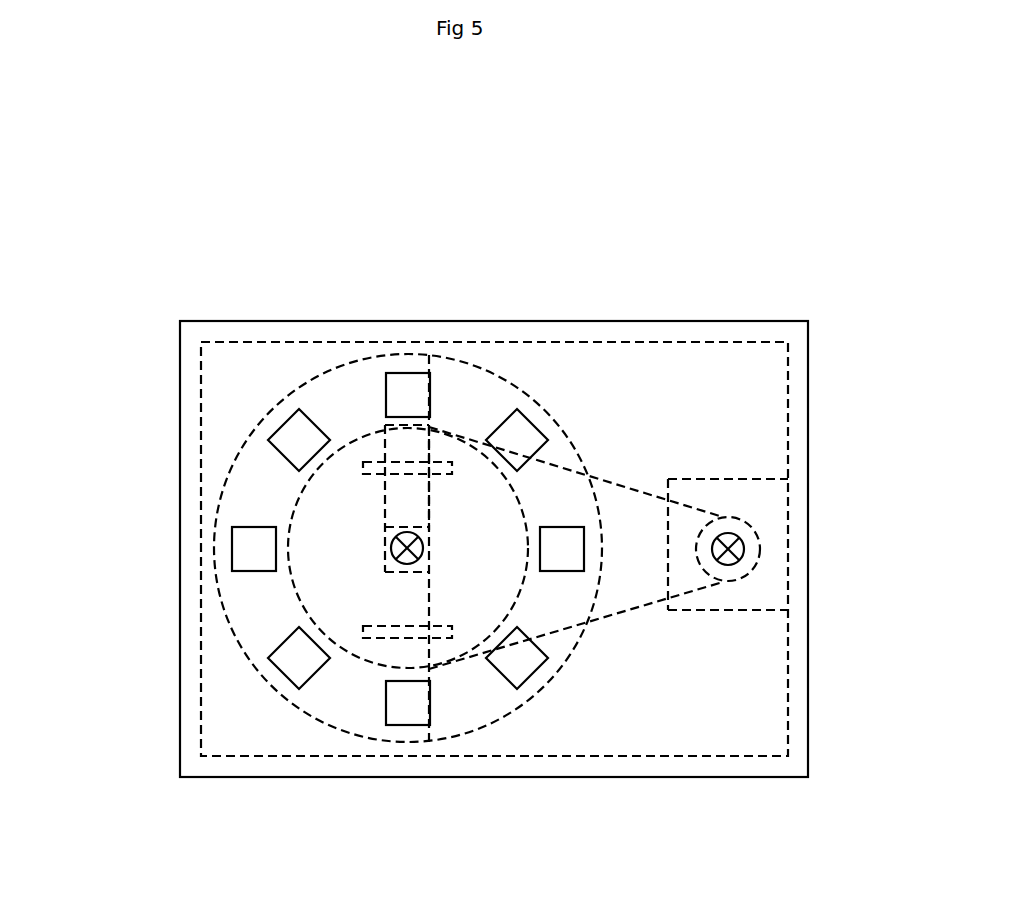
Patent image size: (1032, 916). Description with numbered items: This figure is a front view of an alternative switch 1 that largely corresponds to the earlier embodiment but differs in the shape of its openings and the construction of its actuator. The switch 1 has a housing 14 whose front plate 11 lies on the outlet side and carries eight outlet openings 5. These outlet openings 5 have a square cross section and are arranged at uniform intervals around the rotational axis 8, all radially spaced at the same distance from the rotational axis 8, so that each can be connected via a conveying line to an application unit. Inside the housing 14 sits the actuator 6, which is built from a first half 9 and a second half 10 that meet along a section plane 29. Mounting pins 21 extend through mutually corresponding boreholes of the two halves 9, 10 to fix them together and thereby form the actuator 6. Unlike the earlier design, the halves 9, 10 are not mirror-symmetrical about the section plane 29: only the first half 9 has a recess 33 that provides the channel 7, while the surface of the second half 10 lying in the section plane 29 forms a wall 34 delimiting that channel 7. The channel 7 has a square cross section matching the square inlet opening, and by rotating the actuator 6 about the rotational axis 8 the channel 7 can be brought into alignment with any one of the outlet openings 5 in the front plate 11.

The switch 1 is at (138, 215).
The outlet openings 5 is at (292, 437).
The actuator 6 is at (253, 502).
The channel 7 is at (408, 502).
The rotational axis 8 is at (392, 555).
The first half 9 is at (357, 410).
The second half 10 is at (475, 410).
The front plate 11 is at (730, 437).
The housing 14 is at (699, 312).
The mounting pins 21 is at (395, 630).
The section plane 29 is at (437, 355).
The recess 33 is at (395, 450).
The wall 34 is at (423, 498).